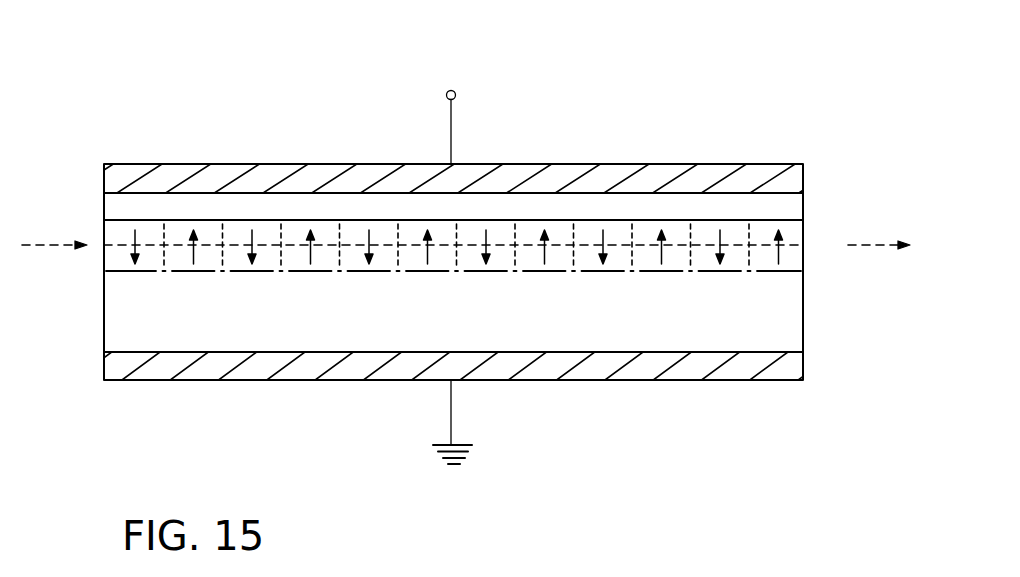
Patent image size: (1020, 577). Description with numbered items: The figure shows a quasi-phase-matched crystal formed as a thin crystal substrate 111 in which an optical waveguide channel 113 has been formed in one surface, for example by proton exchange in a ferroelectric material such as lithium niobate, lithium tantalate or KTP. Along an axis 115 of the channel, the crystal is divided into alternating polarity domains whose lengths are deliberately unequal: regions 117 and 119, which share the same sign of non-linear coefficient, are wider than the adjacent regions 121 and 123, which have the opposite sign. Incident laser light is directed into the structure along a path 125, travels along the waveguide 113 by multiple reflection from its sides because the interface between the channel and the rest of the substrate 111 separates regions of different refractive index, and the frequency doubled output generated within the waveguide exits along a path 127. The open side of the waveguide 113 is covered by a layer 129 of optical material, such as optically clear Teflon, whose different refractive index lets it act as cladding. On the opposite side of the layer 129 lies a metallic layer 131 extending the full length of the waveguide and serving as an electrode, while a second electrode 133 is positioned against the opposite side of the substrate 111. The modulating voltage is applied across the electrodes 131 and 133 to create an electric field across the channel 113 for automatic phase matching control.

The thin crystal substrate 111 is at (98, 220).
The optical waveguide channel 113 is at (812, 270).
The axis of the channel 115 is at (790, 247).
The region 117 is at (181, 233).
The region 119 is at (300, 226).
The region 121 is at (125, 227).
The region 123 is at (253, 234).
The path 125 is at (64, 243).
The path 127 is at (857, 249).
The layer 129 is at (789, 207).
The metallic layer 131 is at (653, 175).
The second electrode 133 is at (687, 373).